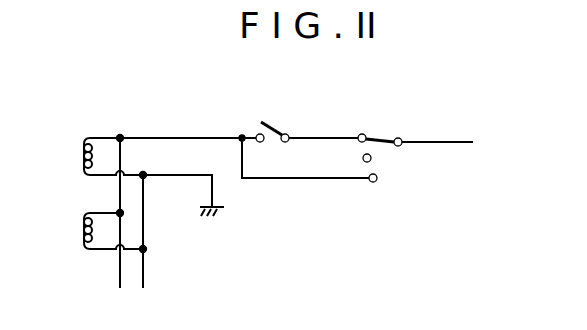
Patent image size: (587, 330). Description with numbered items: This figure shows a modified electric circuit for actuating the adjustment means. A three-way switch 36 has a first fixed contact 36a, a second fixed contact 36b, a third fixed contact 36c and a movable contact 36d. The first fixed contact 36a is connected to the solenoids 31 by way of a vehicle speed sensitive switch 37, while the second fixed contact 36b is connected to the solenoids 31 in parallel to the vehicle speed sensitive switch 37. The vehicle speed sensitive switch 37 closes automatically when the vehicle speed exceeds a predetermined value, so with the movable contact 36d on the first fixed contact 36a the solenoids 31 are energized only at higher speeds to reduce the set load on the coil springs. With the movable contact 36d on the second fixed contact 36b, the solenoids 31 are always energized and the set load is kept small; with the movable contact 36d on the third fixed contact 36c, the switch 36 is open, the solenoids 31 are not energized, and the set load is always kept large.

The solenoids 31 is at (82, 151).
The vehicle speed sensitive switch 37 is at (264, 123).
The three-way switch 36 is at (379, 108).
The first fixed contact 36a is at (362, 134).
The second fixed contact 36b is at (373, 182).
The third fixed contact 36c is at (371, 160).
The movable contact 36d is at (382, 139).